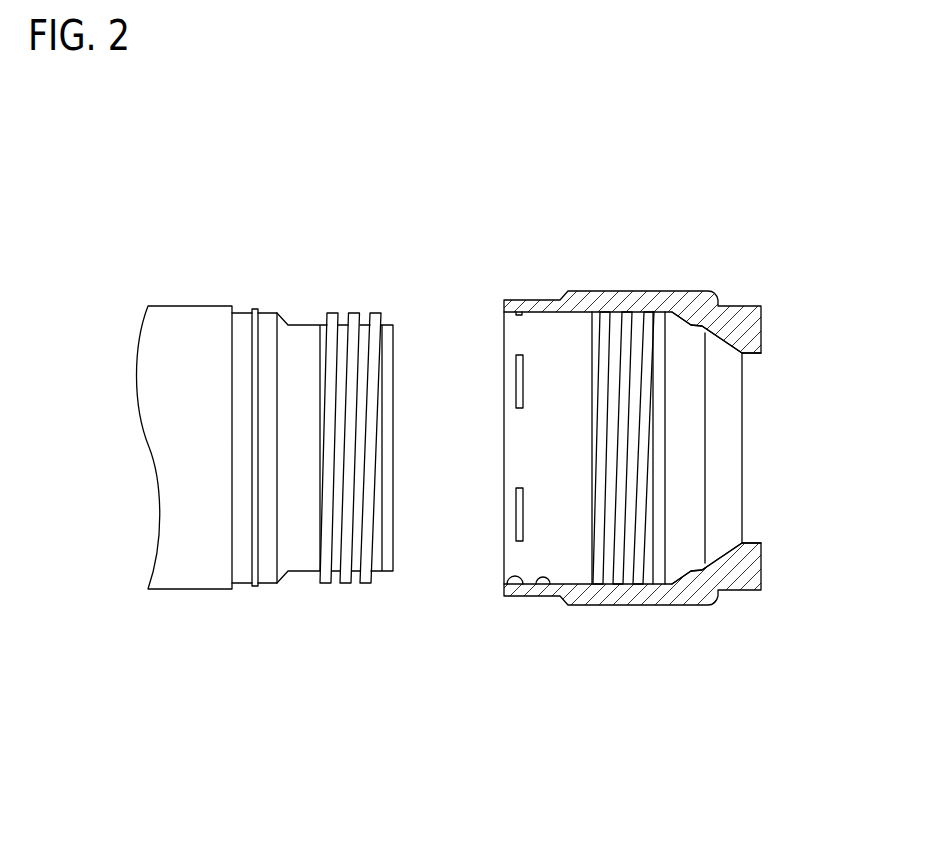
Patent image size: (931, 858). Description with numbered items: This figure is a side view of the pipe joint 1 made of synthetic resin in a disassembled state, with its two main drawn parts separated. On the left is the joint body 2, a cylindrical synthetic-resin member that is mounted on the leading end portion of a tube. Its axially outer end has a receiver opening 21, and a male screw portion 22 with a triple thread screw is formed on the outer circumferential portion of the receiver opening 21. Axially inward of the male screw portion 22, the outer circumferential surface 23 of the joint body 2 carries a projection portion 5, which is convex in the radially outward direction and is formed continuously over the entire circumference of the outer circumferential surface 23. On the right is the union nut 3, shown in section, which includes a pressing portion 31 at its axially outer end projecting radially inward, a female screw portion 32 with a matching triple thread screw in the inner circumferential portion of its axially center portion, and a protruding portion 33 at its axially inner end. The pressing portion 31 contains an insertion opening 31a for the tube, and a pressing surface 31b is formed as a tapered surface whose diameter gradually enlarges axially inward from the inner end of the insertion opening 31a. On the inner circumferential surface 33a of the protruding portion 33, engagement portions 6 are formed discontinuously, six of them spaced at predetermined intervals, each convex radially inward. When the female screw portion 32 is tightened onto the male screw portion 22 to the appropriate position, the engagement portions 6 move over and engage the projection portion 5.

The pipe joint 1 is at (778, 653).
The joint body 2 is at (194, 268).
The receiver opening 21 is at (302, 325).
The male screw portion 22 is at (356, 313).
The outer circumferential surface 23 is at (242, 584).
The projection portion 5 is at (254, 587).
The union nut 3 is at (584, 281).
The pressing portion 31 is at (753, 331).
The insertion opening 31a is at (744, 354).
The pressing surface 31b is at (717, 340).
The female screw portion 32 is at (631, 318).
The protruding portion 33 is at (535, 300).
The inner circumferential surface 33a is at (550, 578).
The engagement portion 6 is at (503, 577).